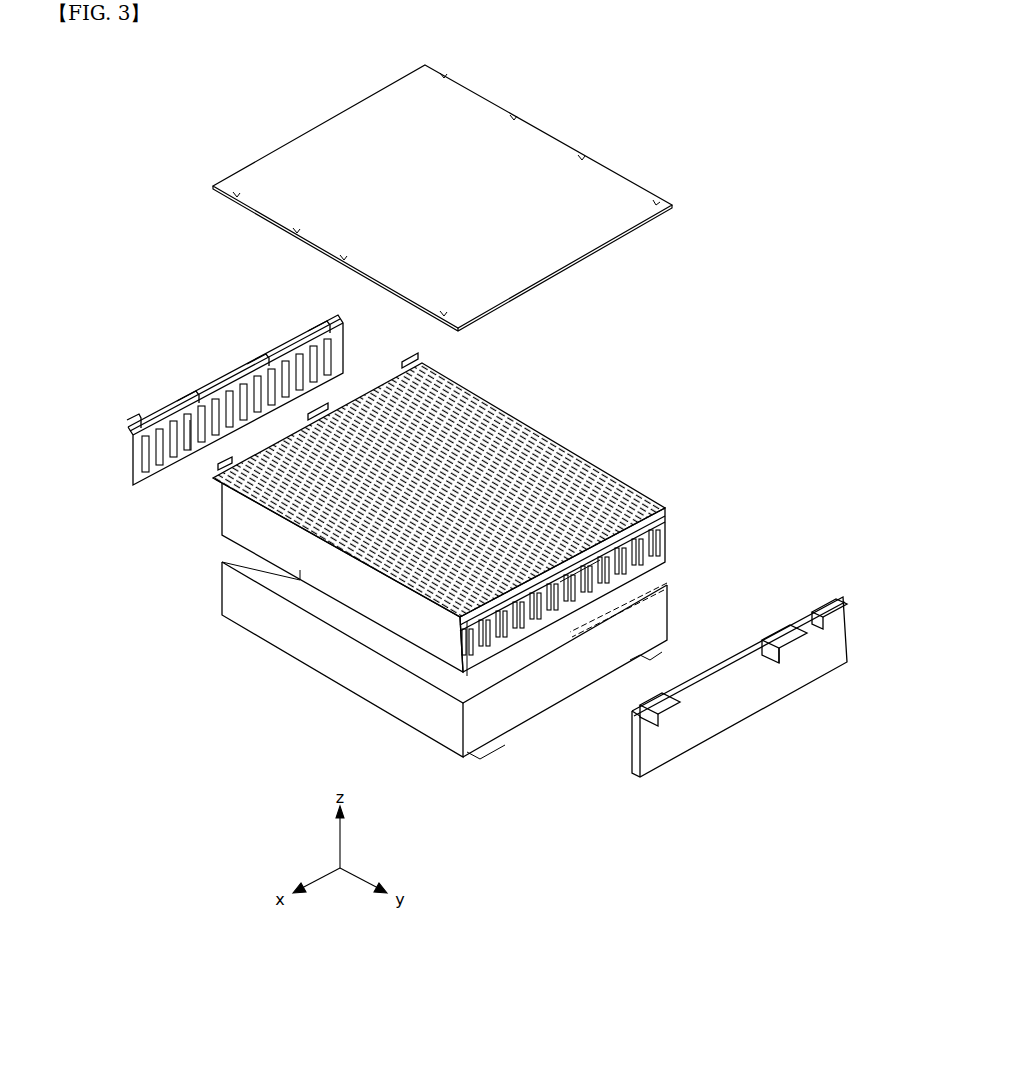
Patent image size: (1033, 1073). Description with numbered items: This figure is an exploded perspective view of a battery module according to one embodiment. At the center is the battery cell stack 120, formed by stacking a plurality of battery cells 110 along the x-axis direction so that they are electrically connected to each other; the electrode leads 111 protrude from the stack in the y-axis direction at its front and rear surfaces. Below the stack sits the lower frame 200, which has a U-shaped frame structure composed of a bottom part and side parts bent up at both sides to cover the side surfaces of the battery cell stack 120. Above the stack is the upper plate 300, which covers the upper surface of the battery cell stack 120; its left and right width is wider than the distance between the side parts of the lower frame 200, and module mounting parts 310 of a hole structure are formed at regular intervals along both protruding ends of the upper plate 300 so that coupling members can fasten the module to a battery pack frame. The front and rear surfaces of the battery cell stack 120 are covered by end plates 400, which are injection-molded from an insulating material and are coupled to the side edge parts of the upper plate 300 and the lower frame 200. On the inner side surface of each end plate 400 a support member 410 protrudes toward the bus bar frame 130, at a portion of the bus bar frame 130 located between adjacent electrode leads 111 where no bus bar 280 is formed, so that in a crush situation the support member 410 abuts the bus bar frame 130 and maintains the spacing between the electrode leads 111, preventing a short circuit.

The battery cell 110 is at (487, 448).
The electrode lead 111 is at (578, 590).
The battery cell stack 120 is at (485, 514).
The bus bar frame 130 is at (608, 592).
The lower frame 200 is at (340, 667).
The bus bar 280 is at (625, 557).
The upper plate 300 is at (330, 140).
The module mounting part 310 is at (444, 76).
The end plate 400 is at (228, 362).
The support member 410 is at (194, 430).